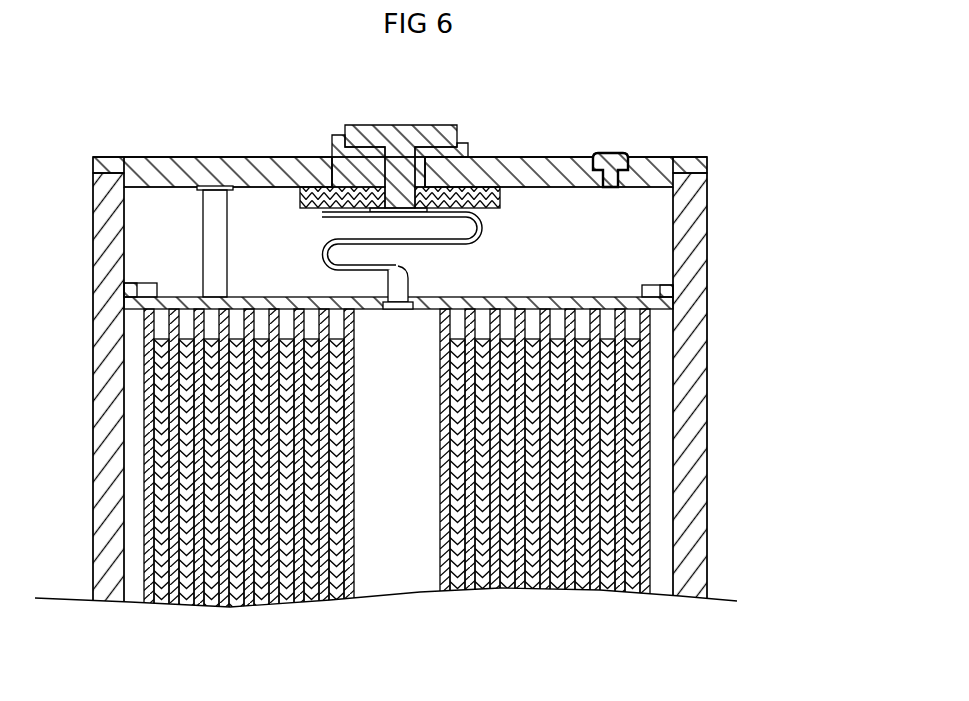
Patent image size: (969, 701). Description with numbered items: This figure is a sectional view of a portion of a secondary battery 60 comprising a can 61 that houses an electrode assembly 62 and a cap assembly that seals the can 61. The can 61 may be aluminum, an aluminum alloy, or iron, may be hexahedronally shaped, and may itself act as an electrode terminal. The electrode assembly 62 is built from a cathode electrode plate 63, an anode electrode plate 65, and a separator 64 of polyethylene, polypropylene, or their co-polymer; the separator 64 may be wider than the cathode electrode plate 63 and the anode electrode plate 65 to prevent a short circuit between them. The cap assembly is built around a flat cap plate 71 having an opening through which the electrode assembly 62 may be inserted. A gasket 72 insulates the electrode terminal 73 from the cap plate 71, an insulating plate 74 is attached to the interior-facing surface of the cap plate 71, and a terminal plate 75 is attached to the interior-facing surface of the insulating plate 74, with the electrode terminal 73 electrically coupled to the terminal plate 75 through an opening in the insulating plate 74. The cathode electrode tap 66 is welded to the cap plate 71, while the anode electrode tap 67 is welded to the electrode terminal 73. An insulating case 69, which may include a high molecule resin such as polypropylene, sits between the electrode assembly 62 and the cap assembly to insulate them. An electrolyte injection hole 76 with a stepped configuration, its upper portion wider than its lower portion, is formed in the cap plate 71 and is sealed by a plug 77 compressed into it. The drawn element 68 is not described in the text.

The secondary battery 60 is at (737, 188).
The can 61 is at (693, 478).
The electrode assembly 62 is at (660, 392).
The cathode electrode plate 63 is at (630, 585).
The separator 64 is at (645, 590).
The anode electrode plate 65 is at (607, 590).
The cathode electrode tap 66 is at (207, 233).
The anode electrode tap 67 is at (320, 257).
The connection portion 68 is at (396, 310).
The insulating case 69 is at (184, 296).
The cap plate 71 is at (220, 166).
The gasket 72 is at (463, 140).
The electrode terminal 73 is at (404, 135).
The insulating plate 74 is at (288, 178).
The terminal plate 75 is at (483, 208).
The electrolyte injection hole 76 is at (613, 188).
The plug 77 is at (610, 152).